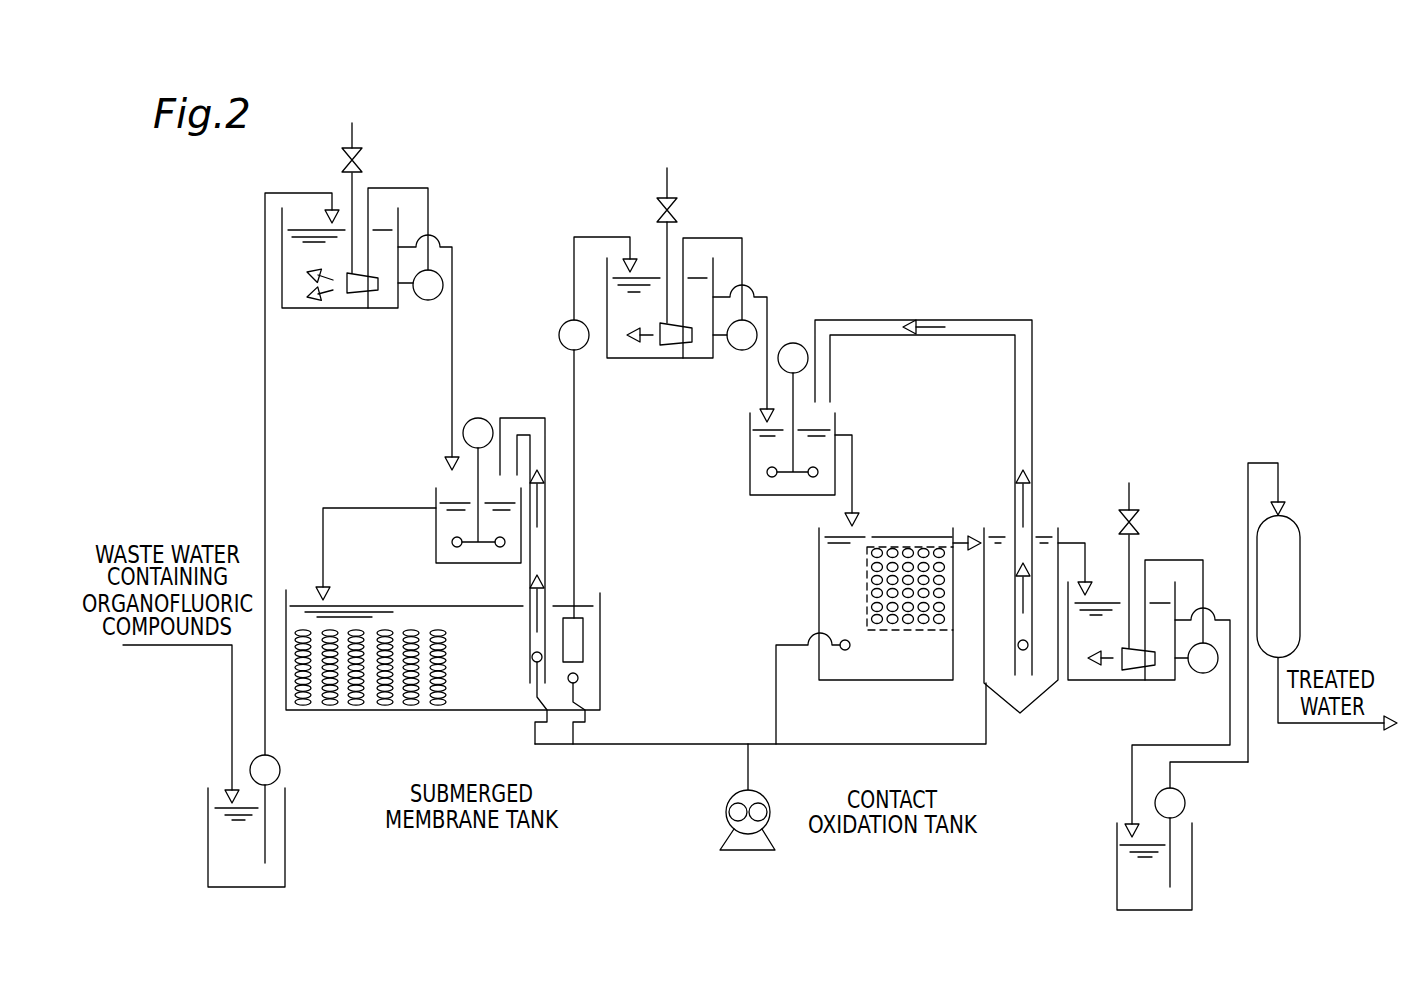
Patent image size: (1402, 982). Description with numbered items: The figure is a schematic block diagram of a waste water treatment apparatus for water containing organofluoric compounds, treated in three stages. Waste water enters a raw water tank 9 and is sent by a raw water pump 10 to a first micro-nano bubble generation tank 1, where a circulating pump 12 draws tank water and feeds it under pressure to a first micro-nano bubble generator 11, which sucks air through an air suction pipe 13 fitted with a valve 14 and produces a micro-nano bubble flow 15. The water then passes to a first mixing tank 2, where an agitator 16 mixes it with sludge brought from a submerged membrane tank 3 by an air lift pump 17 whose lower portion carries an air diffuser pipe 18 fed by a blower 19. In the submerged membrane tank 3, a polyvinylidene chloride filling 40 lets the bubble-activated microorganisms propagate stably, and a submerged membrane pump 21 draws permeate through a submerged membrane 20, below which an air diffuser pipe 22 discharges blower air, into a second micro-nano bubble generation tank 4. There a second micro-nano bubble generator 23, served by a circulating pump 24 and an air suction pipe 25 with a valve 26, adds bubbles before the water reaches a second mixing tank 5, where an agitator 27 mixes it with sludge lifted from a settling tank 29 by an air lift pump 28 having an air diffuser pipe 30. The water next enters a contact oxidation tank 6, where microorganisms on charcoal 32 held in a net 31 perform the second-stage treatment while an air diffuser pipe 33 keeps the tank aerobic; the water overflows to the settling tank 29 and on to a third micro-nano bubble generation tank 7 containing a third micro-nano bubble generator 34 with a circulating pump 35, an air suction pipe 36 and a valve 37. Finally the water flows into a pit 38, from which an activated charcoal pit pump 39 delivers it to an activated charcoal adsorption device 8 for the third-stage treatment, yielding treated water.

The first micro-nano bubble generation tank 1 is at (297, 308).
The first mixing tank 2 is at (436, 545).
The submerged membrane tank 3 is at (483, 712).
The second micro-nano bubble generation tank 4 is at (628, 358).
The second mixing tank 5 is at (750, 477).
The contact oxidation tank 6 is at (900, 680).
The third micro-nano bubble generation tank 7 is at (1092, 680).
The activated charcoal adsorption device 8 is at (1290, 522).
The raw water tank 9 is at (285, 848).
The raw water pump 10 is at (280, 763).
The first micro-nano bubble generator 11 is at (365, 293).
The circulating pump 12 is at (428, 300).
The air suction pipe 13 is at (352, 140).
The valve 14 is at (342, 158).
The micro-nano bubble flow 15 is at (325, 297).
The agitator 16 is at (490, 548).
The air lift pump 17 is at (521, 420).
The air diffuser pipe 18 is at (531, 657).
The blower 19 is at (725, 812).
The submerged membrane 20 is at (583, 630).
The submerged membrane pump 21 is at (563, 322).
The air diffuser pipe 22 is at (578, 678).
The second micro-nano bubble generator 23 is at (680, 345).
The circulating pump 24 is at (740, 350).
The air suction pipe 25 is at (667, 190).
The valve 26 is at (657, 207).
The agitator 27 is at (800, 475).
The air lift pump 28 is at (945, 320).
The settling tank 29 is at (1020, 713).
The air diffuser pipe 30 is at (1028, 648).
The net 31 is at (867, 613).
The charcoal 32 is at (912, 540).
The air diffuser pipe 33 is at (850, 648).
The third micro-nano bubble generator 34 is at (1142, 670).
The circulating pump 35 is at (1203, 673).
The air suction pipe 36 is at (1132, 500).
The valve 37 is at (1120, 518).
The pit 38 is at (1192, 873).
The activated charcoal pit pump 39 is at (1186, 803).
The polyvinylidene chloride filling 40 is at (295, 630).